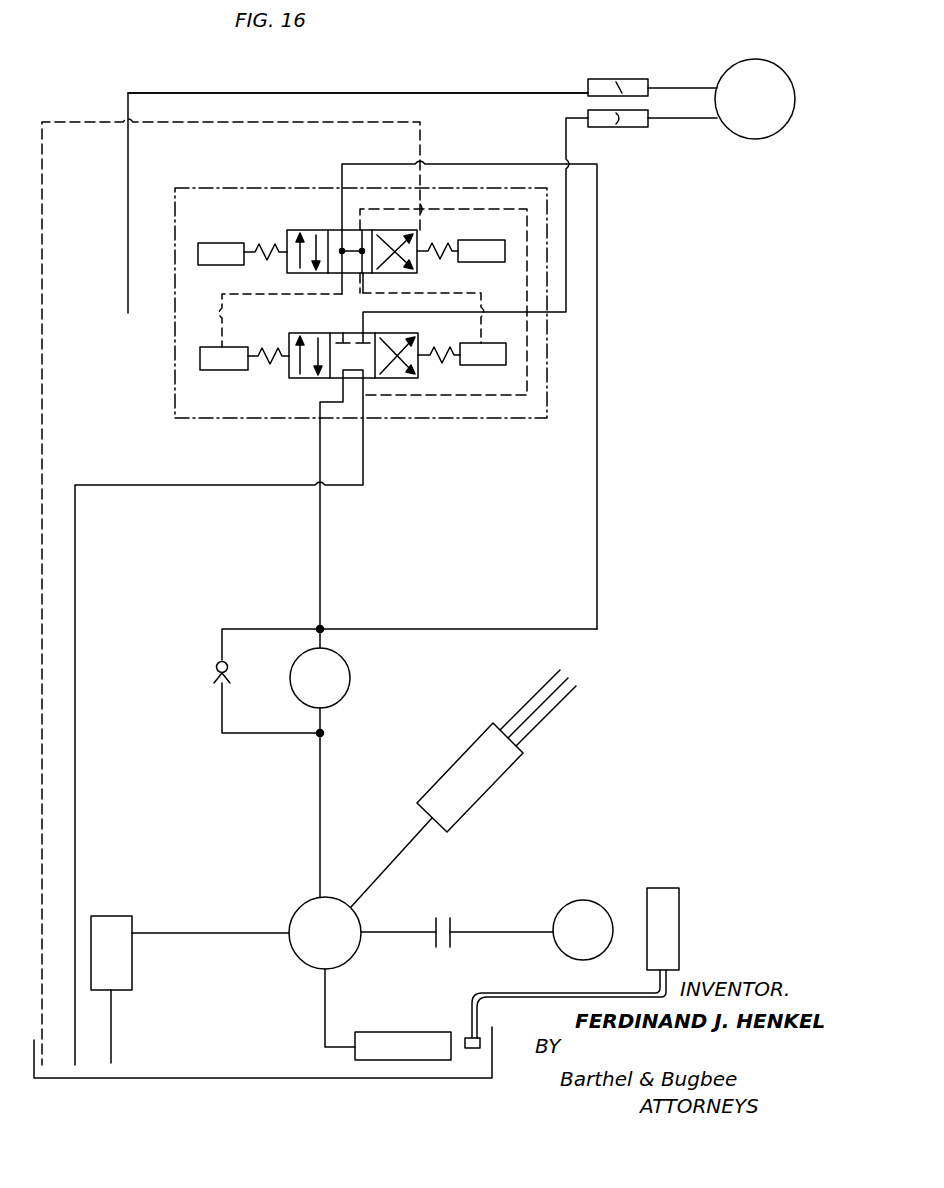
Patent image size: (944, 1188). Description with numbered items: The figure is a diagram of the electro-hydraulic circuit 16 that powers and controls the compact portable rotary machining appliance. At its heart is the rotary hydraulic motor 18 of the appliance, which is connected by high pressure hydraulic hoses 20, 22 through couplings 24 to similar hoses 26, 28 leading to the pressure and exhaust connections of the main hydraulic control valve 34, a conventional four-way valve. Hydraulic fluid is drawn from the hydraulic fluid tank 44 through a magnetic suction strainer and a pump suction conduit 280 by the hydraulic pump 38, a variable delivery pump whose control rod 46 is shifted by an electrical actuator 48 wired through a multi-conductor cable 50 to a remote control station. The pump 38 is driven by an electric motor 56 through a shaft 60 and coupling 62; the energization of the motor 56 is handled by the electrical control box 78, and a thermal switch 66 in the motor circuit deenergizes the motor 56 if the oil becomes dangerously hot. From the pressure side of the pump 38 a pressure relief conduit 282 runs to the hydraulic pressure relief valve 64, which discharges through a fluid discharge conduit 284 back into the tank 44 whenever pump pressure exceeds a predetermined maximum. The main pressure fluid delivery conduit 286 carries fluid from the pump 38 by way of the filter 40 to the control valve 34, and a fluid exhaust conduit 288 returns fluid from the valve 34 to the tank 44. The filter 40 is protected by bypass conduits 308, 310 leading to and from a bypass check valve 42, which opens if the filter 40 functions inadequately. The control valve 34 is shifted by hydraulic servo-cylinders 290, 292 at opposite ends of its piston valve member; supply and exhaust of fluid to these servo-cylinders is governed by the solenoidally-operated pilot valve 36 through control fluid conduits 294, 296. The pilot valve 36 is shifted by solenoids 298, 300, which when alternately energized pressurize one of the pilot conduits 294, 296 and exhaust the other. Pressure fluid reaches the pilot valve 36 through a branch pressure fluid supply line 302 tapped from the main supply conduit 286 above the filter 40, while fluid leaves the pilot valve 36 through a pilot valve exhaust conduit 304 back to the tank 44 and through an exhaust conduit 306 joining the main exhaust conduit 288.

The electro-hydraulic circuit 16 is at (127, 92).
The rotary hydraulic motor 18 is at (752, 62).
The high pressure hydraulic hose 20 is at (664, 88).
The high pressure hydraulic hose 22 is at (664, 118).
The coupling 24 is at (620, 79).
The hose 26 is at (480, 90).
The hose 28 is at (570, 140).
The main hydraulic control valve 34 is at (294, 380).
The solenoidally-operated pilot valve 36 is at (284, 231).
The hydraulic pump 38 is at (300, 906).
The filter 40 is at (287, 690).
The bypass check valve 42 is at (230, 670).
The hydraulic fluid tank 44 is at (240, 1079).
The control rod 46 is at (390, 868).
The electrical actuator 48 is at (463, 746).
The multi-conductor cable 50 is at (518, 716).
The electric motor 56 is at (580, 900).
The shaft 60 is at (482, 932).
The coupling 62 is at (430, 925).
The hydraulic pressure relief valve 64 is at (112, 916).
The thermal switch 66 is at (480, 1049).
The electrical control box 78 is at (681, 929).
The pump suction conduit 280 is at (325, 1025).
The pressure relief conduit 282 is at (207, 933).
The fluid discharge conduit 284 is at (112, 1024).
The pressure fluid delivery conduit 286 is at (321, 542).
The fluid exhaust conduit 288 is at (366, 468).
The hydraulic servo-cylinder 290 is at (220, 371).
The hydraulic servo-cylinder 292 is at (478, 366).
The control fluid conduit 294 is at (268, 294).
The control fluid conduit 296 is at (470, 293).
The solenoid 298 is at (222, 243).
The solenoid 300 is at (478, 240).
The branch pressure fluid supply line 302 is at (392, 164).
The pilot valve exhaust conduit 304 is at (424, 142).
The exhaust conduit 306 is at (470, 211).
The bypass conduit 308 is at (260, 733).
The bypass conduit 310 is at (244, 629).